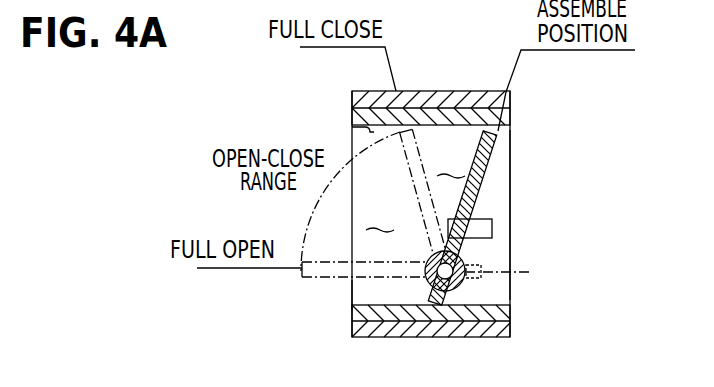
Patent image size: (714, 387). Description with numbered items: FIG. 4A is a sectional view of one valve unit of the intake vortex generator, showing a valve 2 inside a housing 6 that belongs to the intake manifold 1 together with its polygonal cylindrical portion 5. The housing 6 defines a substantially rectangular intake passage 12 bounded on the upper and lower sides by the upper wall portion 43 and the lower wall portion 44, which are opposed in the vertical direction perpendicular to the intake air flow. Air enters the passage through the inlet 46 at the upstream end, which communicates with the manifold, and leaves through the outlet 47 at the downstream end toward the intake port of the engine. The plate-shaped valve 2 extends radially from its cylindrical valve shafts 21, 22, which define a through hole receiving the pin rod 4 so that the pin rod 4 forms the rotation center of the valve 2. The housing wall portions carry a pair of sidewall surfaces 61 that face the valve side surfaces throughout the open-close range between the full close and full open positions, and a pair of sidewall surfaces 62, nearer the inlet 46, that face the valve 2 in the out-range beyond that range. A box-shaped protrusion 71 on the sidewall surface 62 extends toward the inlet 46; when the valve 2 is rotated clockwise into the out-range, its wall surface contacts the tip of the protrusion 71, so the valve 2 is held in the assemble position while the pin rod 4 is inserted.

The intake manifold 1 is at (462, 198).
The polygonal cylindrical portion 5 is at (462, 238).
The intake passage 12 is at (352, 128).
The housing 6 is at (489, 108).
The upper wall portion 43 is at (505, 115).
The valve 2 is at (488, 160).
The sidewall surface 62 is at (451, 163).
The sidewall surface 61 is at (380, 217).
The protrusion 71 is at (492, 226).
The inlet 46 is at (505, 251).
The valve shaft 21 is at (527, 281).
The valve shaft 22 is at (462, 287).
The outlet 47 is at (352, 297).
The pin rod 4 is at (462, 345).
The lower wall portion 44 is at (394, 322).